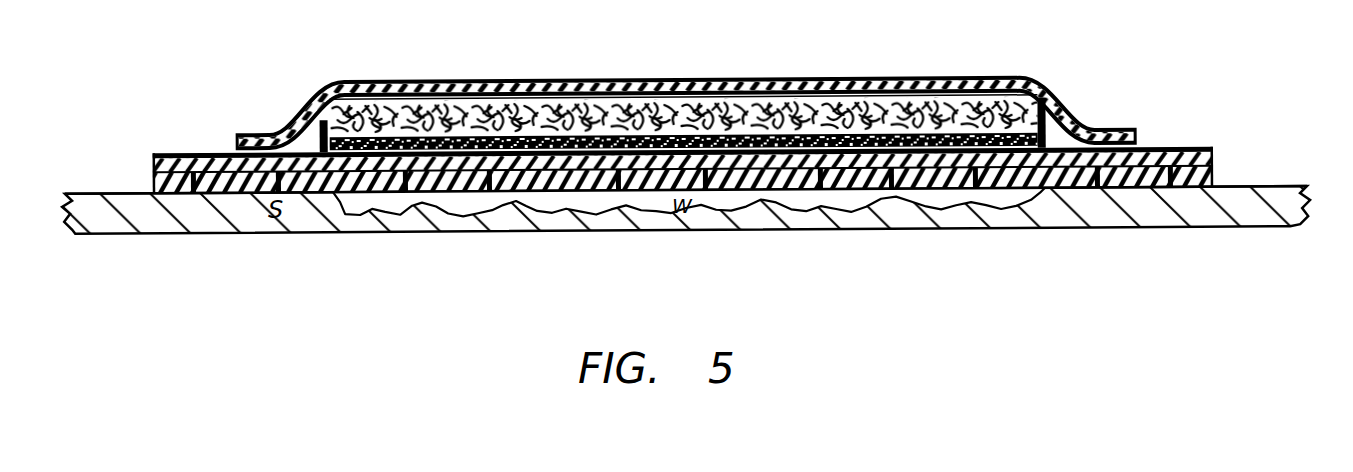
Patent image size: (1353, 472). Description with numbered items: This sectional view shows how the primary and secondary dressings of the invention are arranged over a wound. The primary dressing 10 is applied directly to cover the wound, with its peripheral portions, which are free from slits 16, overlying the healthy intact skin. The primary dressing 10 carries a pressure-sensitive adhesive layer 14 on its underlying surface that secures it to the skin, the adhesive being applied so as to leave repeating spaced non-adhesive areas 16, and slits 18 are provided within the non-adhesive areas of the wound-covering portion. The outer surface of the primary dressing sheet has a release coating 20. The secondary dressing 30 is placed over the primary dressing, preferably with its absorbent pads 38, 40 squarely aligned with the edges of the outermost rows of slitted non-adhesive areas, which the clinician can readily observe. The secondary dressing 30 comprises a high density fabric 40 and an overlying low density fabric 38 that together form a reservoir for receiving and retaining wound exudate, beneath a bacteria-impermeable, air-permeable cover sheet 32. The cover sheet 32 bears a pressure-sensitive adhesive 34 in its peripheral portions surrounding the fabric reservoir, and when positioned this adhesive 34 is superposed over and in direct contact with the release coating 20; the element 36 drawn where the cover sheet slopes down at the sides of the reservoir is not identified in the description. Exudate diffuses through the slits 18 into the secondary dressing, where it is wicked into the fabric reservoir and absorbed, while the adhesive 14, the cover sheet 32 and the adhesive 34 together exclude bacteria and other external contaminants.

The primary dressing 10 is at (1222, 176).
The pressure-sensitive adhesive layer 14 is at (357, 187).
The spaced areas free of adhesive 16 is at (212, 183).
The slits 18 is at (618, 178).
The release coating 20 is at (158, 152).
The secondary dressing 30 is at (691, 85).
The cover sheet 32 is at (377, 83).
The pressure-sensitive adhesive layer 34 is at (233, 150).
The film edge portion 36 is at (300, 112).
The low density fabric 38 is at (652, 102).
The high density fabric 40 is at (520, 102).